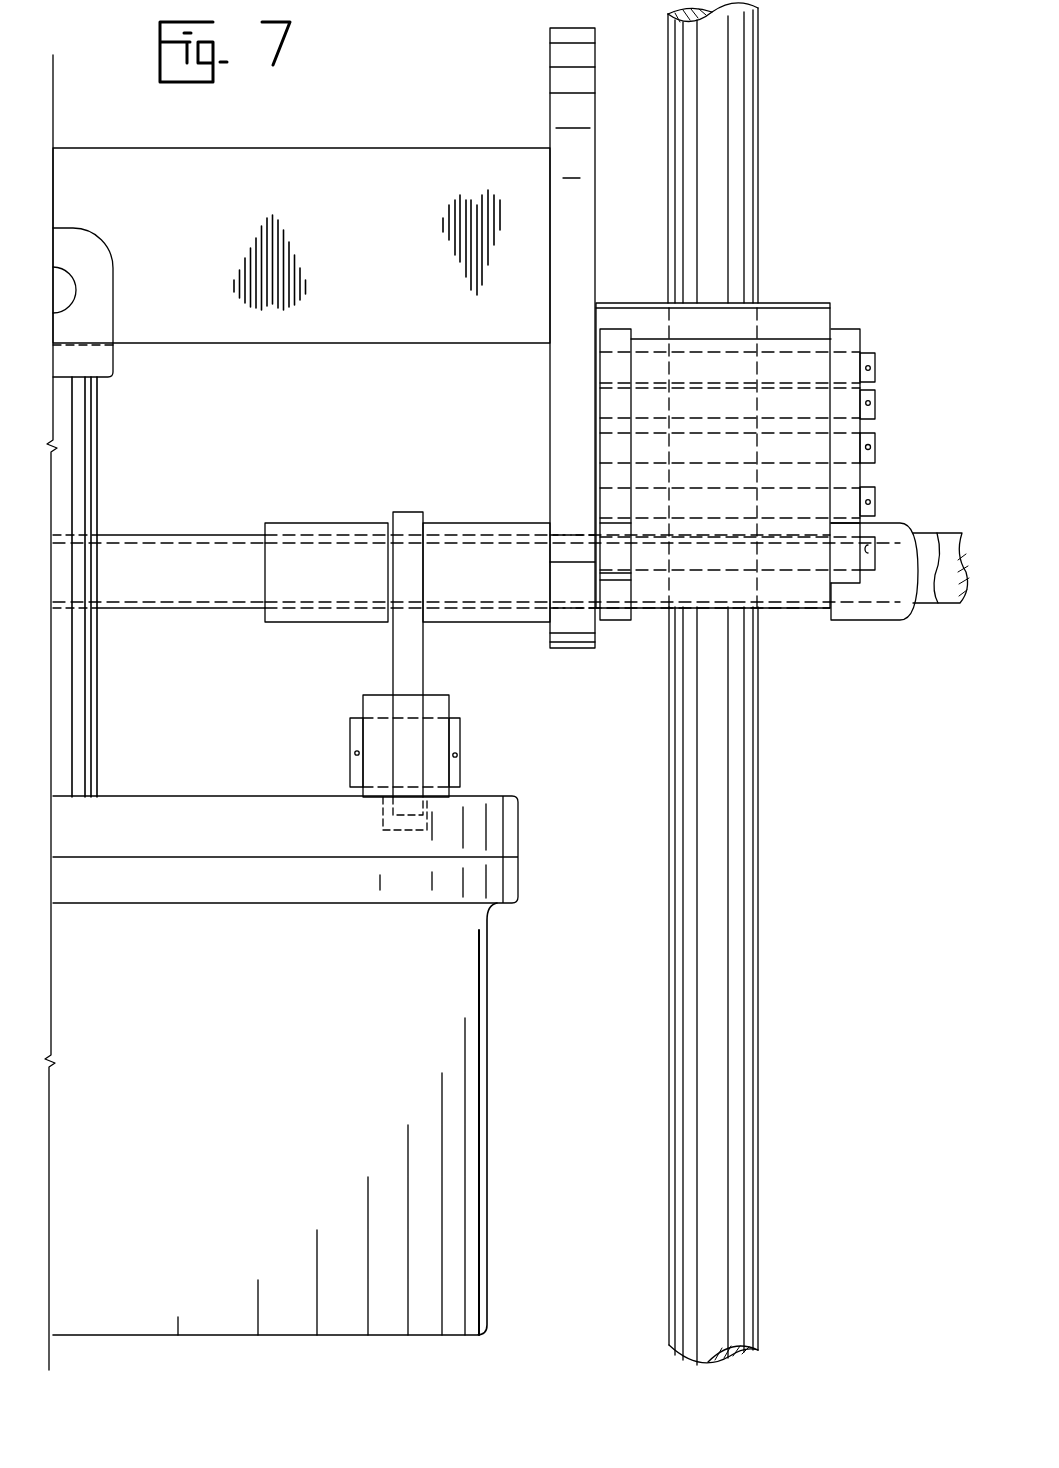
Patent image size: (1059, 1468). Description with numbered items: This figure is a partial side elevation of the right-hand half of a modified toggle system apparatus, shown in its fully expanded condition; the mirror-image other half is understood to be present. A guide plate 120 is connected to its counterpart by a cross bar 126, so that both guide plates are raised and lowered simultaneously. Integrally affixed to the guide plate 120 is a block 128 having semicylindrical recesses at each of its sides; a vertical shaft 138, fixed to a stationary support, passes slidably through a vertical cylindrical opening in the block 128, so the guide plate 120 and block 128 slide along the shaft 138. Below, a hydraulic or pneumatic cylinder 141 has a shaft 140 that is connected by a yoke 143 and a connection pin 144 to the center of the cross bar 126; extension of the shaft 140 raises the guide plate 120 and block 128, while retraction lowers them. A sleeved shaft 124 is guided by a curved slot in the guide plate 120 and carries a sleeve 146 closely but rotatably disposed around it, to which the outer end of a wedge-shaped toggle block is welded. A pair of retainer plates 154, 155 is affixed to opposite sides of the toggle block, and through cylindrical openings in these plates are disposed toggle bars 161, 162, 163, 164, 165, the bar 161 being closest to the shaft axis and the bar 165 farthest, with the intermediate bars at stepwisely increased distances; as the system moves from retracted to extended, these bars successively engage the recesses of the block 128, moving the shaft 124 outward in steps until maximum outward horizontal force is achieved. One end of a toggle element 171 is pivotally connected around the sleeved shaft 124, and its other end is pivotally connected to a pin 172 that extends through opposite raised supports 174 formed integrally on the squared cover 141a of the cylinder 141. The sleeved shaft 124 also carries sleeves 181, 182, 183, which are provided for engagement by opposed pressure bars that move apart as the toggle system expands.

The guide plate 120 is at (550, 74).
The sleeved shaft 124 is at (958, 606).
The cross bar 126 is at (345, 152).
The block 128 is at (804, 303).
The vertical shaft 138 is at (761, 98).
The shaft 140 is at (99, 448).
The cylinder 141 is at (488, 955).
The cover 141a is at (518, 838).
The yoke 143 is at (72, 228).
The connection pin 144 is at (73, 285).
The sleeve 146 is at (947, 608).
The retainer plate 154 is at (610, 329).
The retainer plate 155 is at (850, 329).
The toggle bar 161 is at (877, 367).
The toggle bar 162 is at (877, 400).
The toggle bar 163 is at (877, 444).
The toggle bar 164 is at (880, 495).
The toggle bar 165 is at (878, 540).
The toggle element 171 is at (424, 658).
The pin 172 is at (461, 732).
The raised support 174 is at (363, 703).
The sleeve 181 is at (312, 623).
The sleeve 182 is at (490, 623).
The sleeve 183 is at (878, 622).